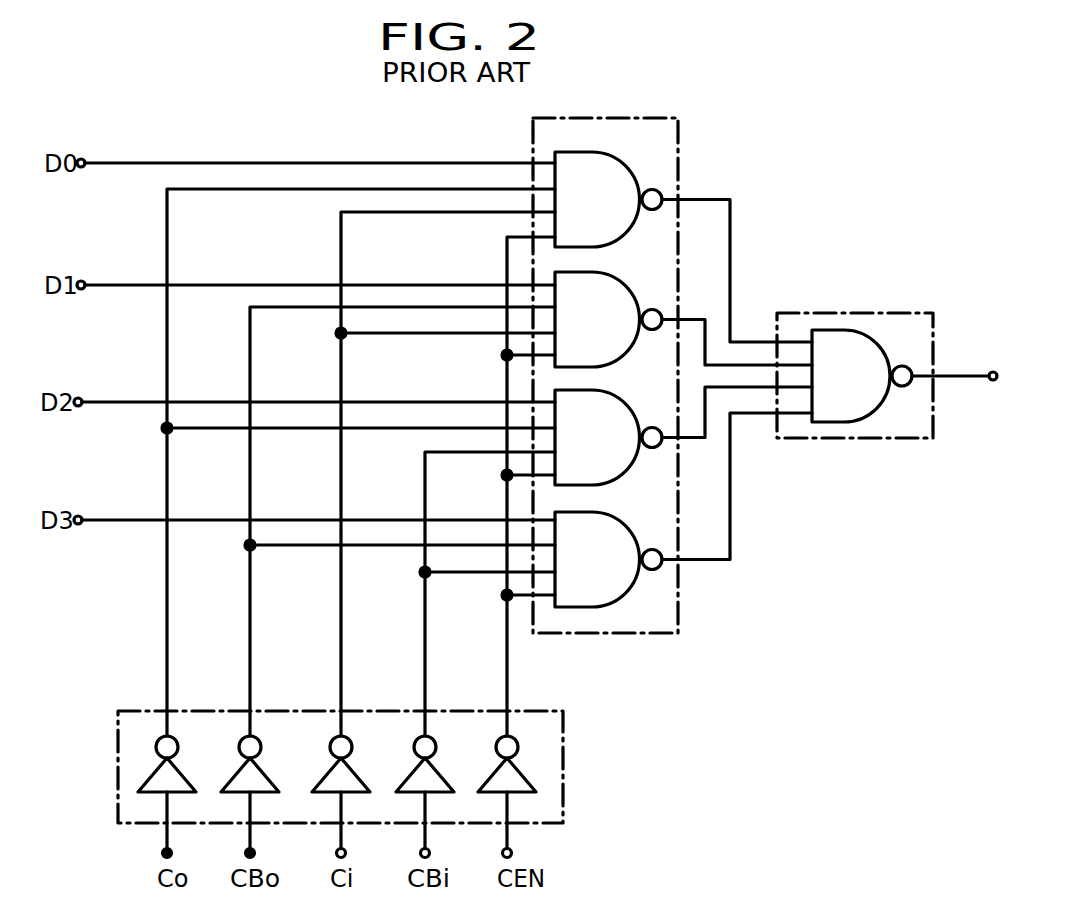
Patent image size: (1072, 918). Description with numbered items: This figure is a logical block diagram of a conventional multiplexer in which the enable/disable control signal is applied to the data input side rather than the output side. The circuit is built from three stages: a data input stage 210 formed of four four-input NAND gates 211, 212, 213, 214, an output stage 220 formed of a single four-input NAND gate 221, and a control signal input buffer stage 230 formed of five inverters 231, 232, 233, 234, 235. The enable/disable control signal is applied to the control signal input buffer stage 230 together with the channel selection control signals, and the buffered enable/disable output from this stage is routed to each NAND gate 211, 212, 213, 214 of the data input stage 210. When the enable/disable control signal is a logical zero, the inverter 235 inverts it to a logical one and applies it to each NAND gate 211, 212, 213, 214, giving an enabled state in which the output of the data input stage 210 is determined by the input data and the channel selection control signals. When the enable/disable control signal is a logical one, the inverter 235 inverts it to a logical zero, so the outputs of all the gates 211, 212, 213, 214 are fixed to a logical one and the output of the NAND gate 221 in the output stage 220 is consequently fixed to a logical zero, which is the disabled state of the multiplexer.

The data input stage 210 is at (680, 155).
The four-input NAND gate 211 is at (683, 247).
The four-input NAND gate 212 is at (683, 319).
The four-input NAND gate 213 is at (683, 436).
The four-input NAND gate 214 is at (683, 510).
The output stage 220 is at (900, 313).
The four-input NAND gate 221 is at (928, 376).
The control signal input buffer stage 230 is at (565, 790).
The inverter 231 is at (186, 780).
The inverter 232 is at (268, 780).
The inverter 233 is at (358, 780).
The inverter 234 is at (443, 780).
The inverter 235 is at (525, 780).